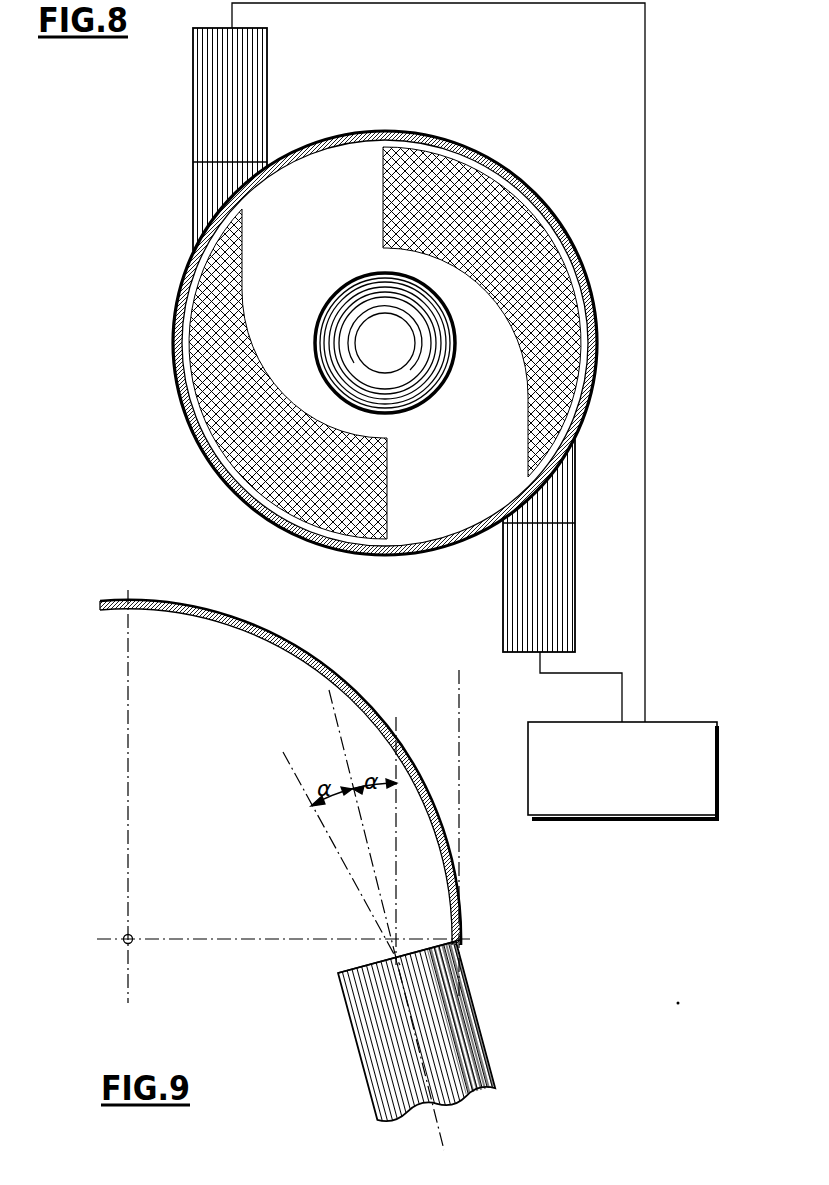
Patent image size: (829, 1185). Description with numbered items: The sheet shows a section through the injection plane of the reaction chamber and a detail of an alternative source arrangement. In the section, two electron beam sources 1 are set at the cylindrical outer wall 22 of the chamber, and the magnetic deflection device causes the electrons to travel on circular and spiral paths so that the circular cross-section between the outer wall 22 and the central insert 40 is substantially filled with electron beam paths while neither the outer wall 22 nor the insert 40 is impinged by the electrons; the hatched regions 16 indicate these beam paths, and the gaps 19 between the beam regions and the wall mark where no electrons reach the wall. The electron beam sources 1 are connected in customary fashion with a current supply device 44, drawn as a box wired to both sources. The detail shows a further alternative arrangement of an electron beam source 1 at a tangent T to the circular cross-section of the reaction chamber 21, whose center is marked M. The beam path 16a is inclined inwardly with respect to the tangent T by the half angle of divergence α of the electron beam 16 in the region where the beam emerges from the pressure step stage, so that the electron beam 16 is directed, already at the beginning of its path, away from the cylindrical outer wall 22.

In FIG. 8, the electron beam source 1 is at (215, 103).
In FIG. 9, the electron beam source 1 is at (462, 1040).
In FIG. 8, the electron beam 16 is at (460, 197).
In FIG. 9, the electron beam 16 is at (389, 952).
In FIG. 9, the beam path 16a is at (324, 702).
In FIG. 8, the gap 19 is at (243, 201).
In FIG. 9, the reaction chamber 21 is at (152, 593).
In FIG. 8, the cylindrical outer wall 22 is at (515, 175).
In FIG. 9, the cylindrical outer wall 22 is at (162, 609).
In FIG. 8, the insert 40 is at (399, 356).
In FIG. 8, the current supply device 44 is at (628, 781).
In FIG. 9, the center point M is at (132, 937).
In FIG. 9, the tangent T is at (458, 686).